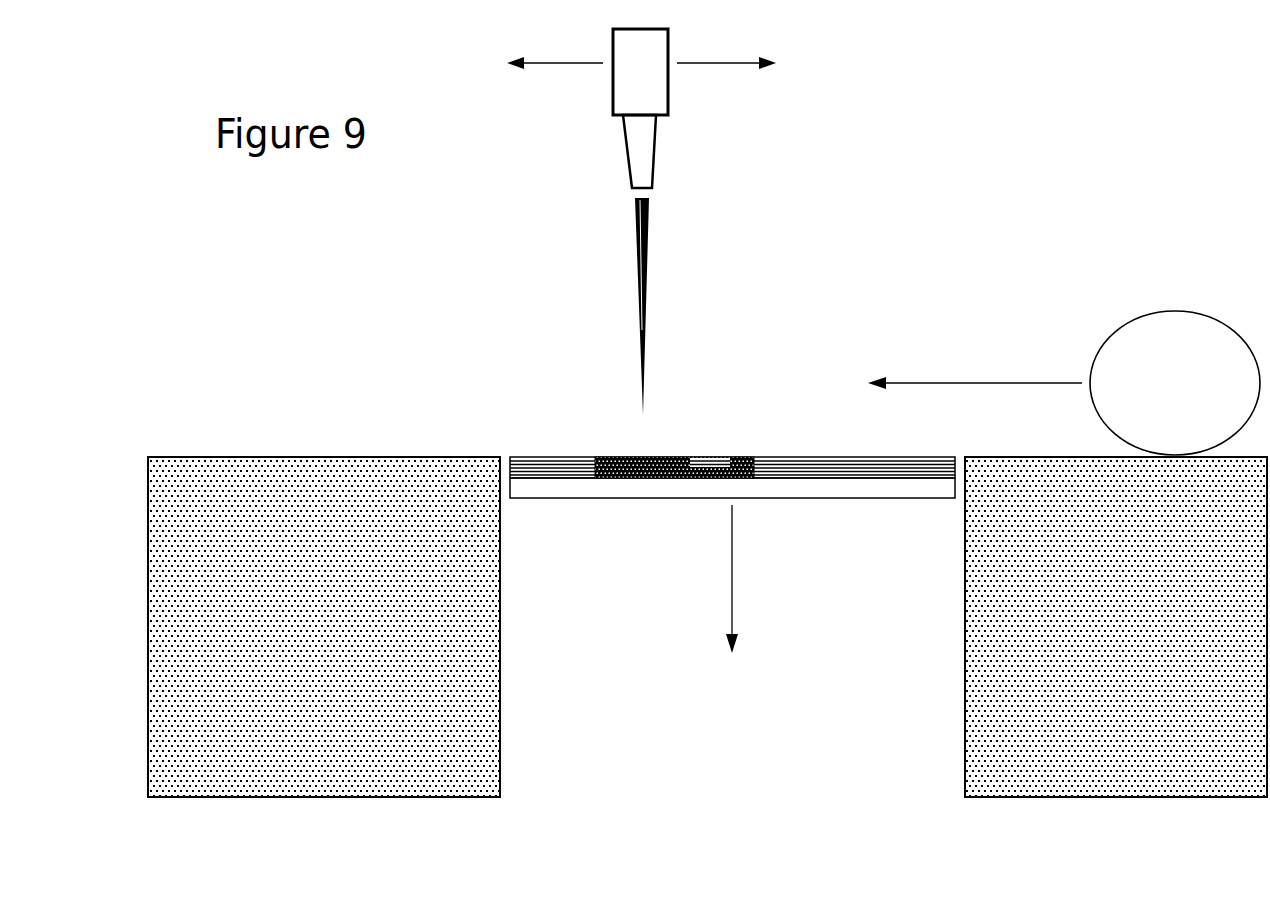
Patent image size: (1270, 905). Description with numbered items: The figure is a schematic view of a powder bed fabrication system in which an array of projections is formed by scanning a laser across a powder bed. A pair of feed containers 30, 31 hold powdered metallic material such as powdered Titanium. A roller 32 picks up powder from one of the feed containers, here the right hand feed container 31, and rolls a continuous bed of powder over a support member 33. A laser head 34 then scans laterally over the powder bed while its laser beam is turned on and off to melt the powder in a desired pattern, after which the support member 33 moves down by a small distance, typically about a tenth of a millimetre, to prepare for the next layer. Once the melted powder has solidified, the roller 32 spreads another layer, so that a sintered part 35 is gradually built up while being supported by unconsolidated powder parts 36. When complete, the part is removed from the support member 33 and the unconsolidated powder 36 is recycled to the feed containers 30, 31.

The feed container 30 is at (492, 705).
The feed container 31 is at (972, 704).
The roller 32 is at (1112, 333).
The support member 33 is at (640, 492).
The laser head 34 is at (622, 90).
The sintered part 35 is at (663, 457).
The unconsolidated powder parts 36 is at (562, 456).